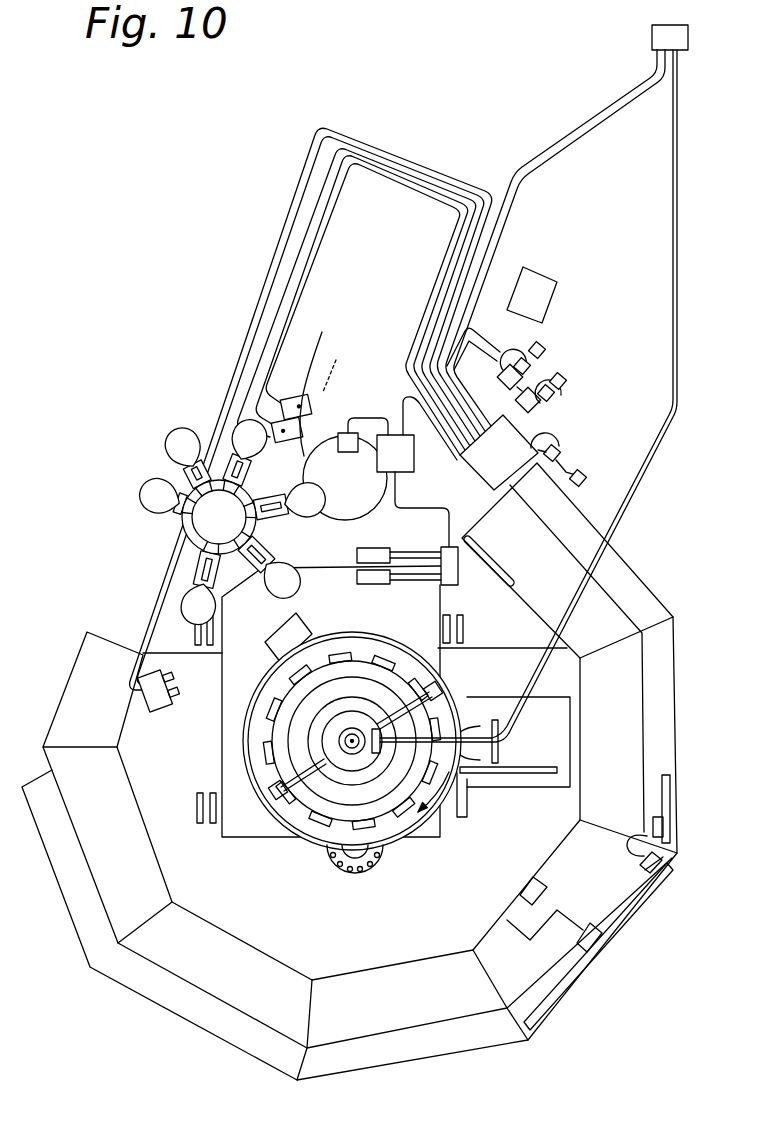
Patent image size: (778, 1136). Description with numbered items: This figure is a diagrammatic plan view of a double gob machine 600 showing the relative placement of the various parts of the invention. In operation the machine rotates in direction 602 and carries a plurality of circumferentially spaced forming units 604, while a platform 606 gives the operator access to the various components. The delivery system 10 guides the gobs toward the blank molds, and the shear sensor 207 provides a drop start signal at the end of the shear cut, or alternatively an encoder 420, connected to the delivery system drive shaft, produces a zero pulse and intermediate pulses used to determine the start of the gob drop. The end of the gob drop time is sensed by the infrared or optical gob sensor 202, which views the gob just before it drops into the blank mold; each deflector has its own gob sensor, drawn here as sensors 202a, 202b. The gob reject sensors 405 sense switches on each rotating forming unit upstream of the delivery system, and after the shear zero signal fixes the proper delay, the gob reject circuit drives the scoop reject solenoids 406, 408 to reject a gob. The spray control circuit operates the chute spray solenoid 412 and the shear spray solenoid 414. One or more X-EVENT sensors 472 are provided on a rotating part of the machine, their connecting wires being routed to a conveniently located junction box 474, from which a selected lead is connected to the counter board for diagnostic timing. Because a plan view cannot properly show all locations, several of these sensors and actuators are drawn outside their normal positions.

The H-28 double gob machine 600 is at (160, 308).
The platform 606 is at (628, 706).
The forming units 604 is at (278, 790).
The direction of rotation 602 is at (447, 800).
The X-EVENT sensors 472 is at (370, 753).
The junction box 474 is at (652, 33).
The gob reject sensors 405 is at (156, 702).
The shear sensor 207 is at (357, 302).
The delivery system 10 is at (338, 531).
The encoder 420 is at (347, 442).
The gob sensor 202 is at (483, 457).
The connector block a 202a is at (367, 553).
The connector block b 202b is at (367, 577).
The chute spray solenoid 412 is at (538, 348).
The shear spray solenoid 414 is at (560, 378).
The scoop reject solenoid 406 is at (560, 428).
The scoop reject solenoid 408 is at (580, 475).